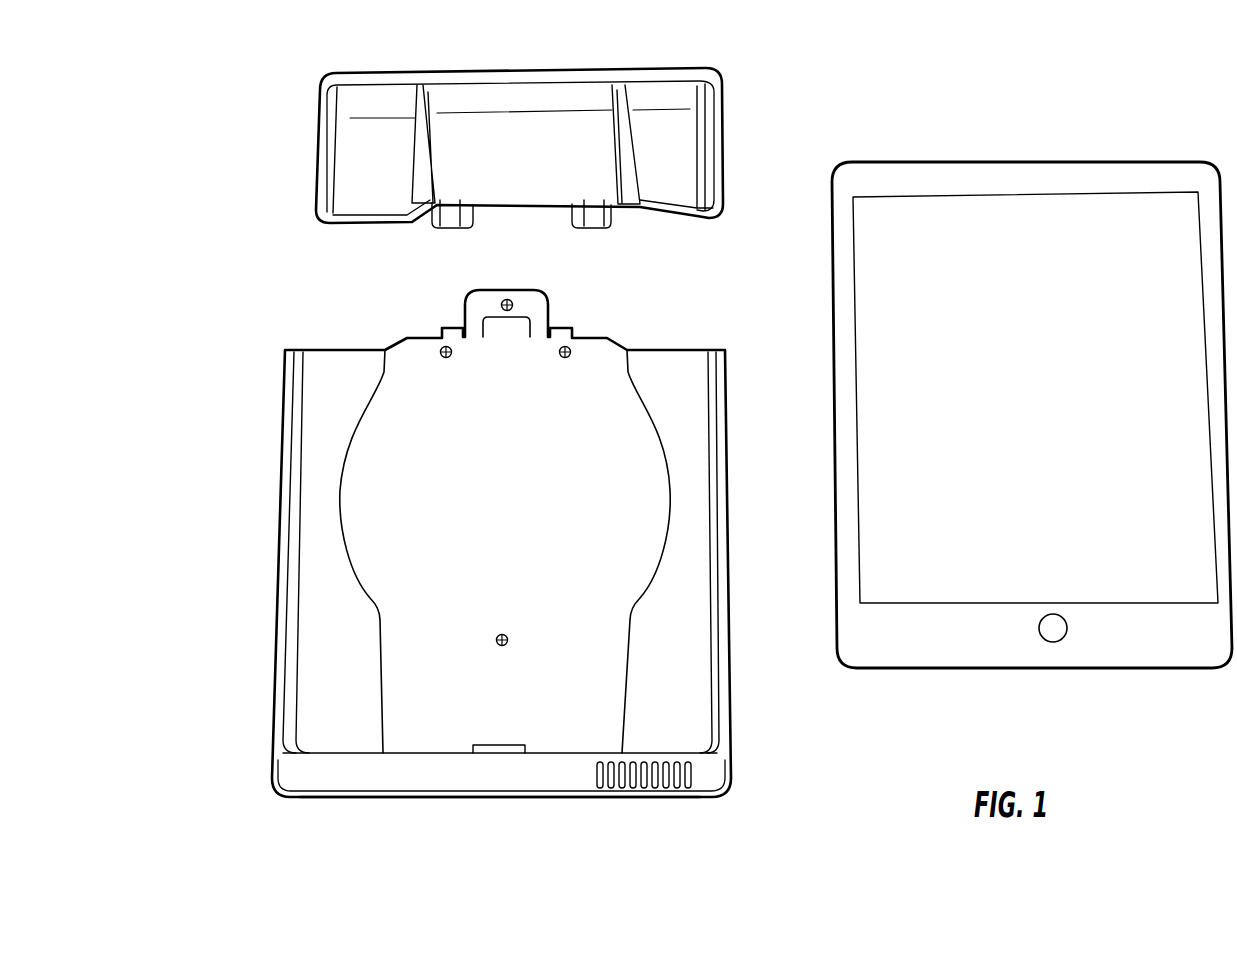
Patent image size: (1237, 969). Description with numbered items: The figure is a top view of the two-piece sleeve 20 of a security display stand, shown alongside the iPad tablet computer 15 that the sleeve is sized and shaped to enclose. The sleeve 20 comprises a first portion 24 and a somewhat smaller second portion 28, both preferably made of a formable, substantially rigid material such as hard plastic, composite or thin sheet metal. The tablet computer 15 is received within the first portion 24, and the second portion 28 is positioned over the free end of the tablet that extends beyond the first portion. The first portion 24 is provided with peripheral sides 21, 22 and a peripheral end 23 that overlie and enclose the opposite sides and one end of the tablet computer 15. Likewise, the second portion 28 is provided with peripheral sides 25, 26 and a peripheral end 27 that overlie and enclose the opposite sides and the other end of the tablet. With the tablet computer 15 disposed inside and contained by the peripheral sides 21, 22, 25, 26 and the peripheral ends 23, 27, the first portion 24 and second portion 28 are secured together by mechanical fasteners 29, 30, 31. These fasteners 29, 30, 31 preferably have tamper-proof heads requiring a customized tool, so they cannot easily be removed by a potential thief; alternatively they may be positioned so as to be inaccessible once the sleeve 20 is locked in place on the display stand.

The tablet computer 15 is at (1005, 160).
The sleeve 20 is at (238, 103).
The peripheral side 21 is at (280, 473).
The peripheral side 22 is at (718, 477).
The peripheral end 23 is at (410, 782).
The first portion 24 is at (406, 505).
The peripheral side 25 is at (317, 140).
The peripheral side 26 is at (716, 130).
The peripheral end 27 is at (468, 75).
The second portion 28 is at (356, 170).
The mechanical fastener 29 is at (507, 298).
The mechanical fastener 30 is at (445, 345).
The mechanical fastener 31 is at (575, 343).